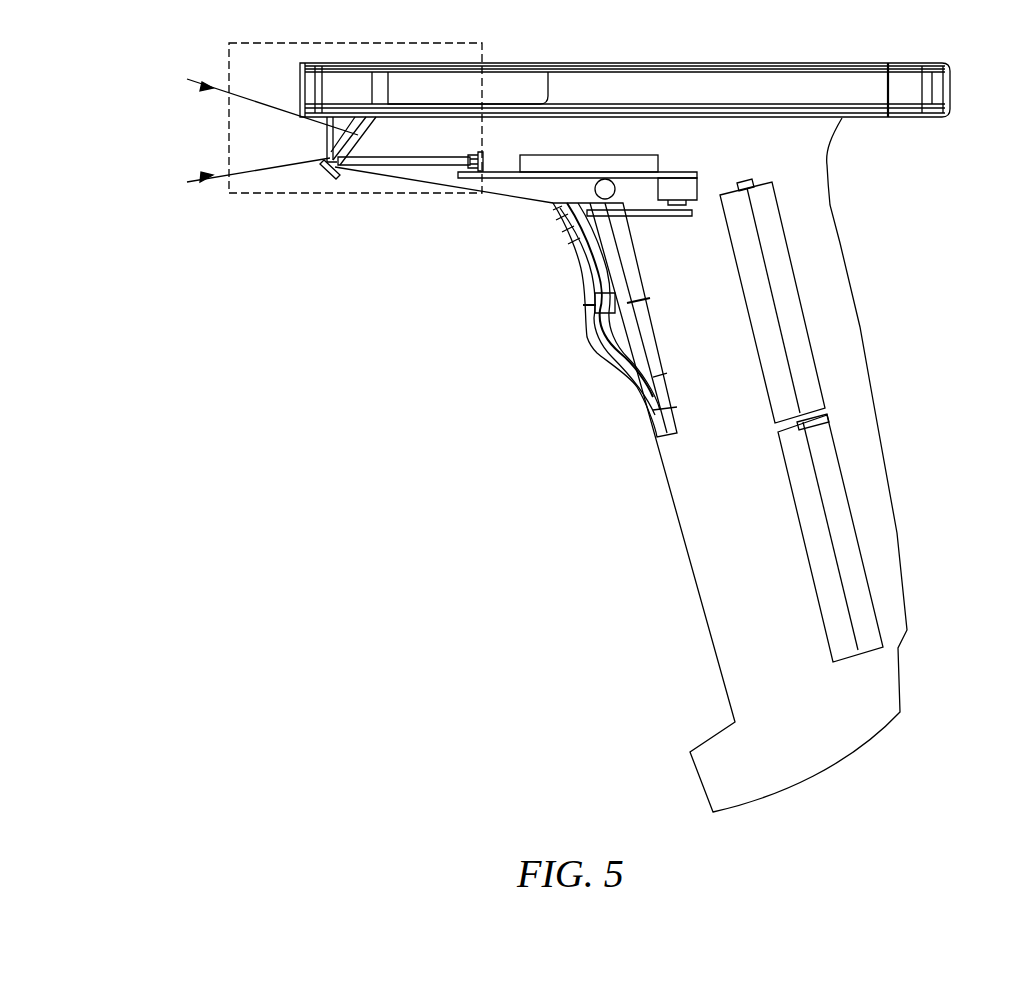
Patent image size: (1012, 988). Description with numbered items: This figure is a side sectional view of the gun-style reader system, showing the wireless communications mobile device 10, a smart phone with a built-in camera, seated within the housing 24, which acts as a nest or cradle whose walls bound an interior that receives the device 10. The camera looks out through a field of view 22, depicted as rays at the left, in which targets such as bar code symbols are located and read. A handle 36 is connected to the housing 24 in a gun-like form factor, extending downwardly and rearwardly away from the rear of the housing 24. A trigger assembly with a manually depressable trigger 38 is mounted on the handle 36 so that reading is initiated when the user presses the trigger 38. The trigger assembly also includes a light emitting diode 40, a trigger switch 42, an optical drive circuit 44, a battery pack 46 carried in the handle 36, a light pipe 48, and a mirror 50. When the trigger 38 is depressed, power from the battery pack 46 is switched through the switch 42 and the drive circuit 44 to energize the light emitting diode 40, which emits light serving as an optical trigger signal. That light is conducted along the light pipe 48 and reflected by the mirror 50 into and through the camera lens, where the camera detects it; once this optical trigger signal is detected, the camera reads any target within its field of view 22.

The wireless communications mobile device 10 is at (699, 88).
The housing 24 is at (957, 87).
The field of view 22 is at (223, 175).
The mirror 50 is at (330, 180).
The light pipe 48 is at (407, 163).
The light emitting diode 40 is at (483, 164).
The optical drive circuit 44 is at (618, 162).
The trigger switch 42 is at (685, 187).
The trigger 38 is at (592, 337).
The handle 36 is at (705, 568).
The battery pack 46 is at (797, 490).